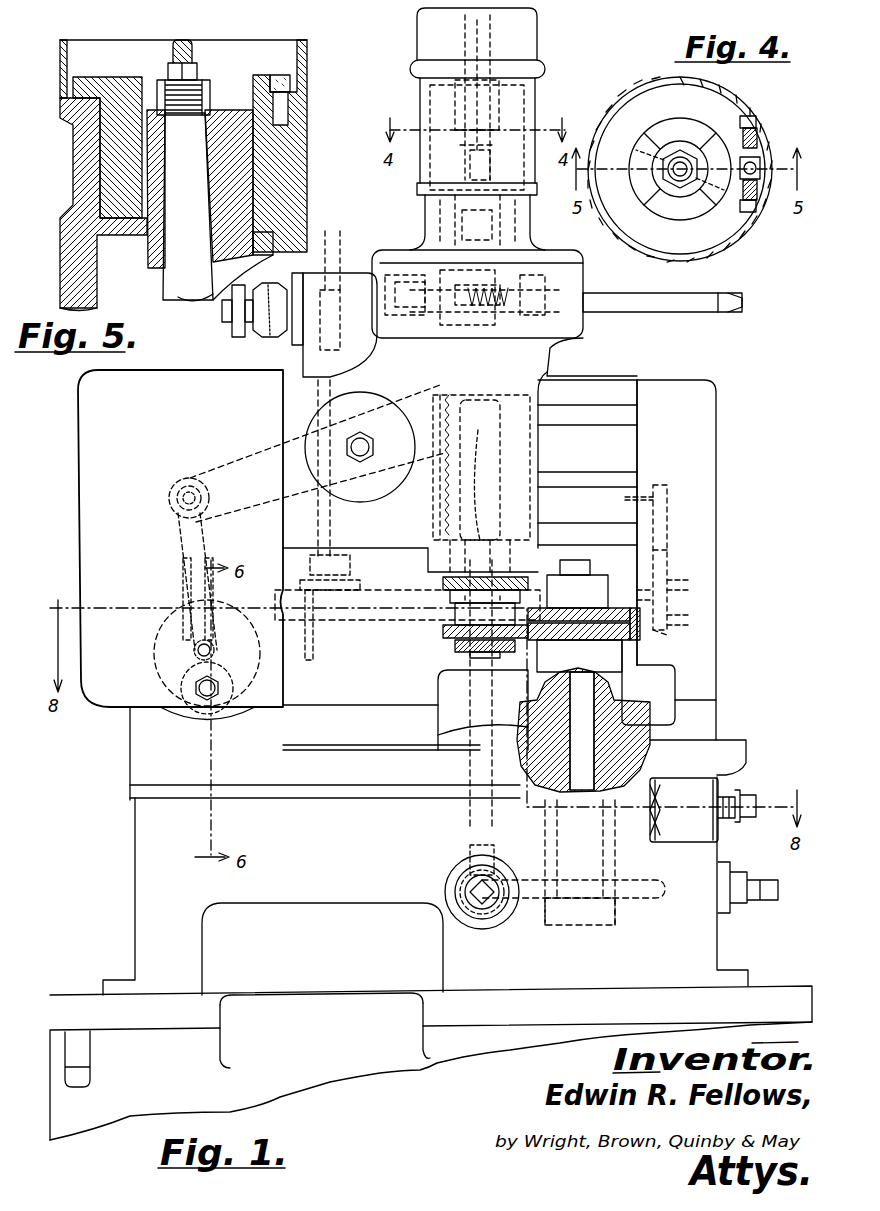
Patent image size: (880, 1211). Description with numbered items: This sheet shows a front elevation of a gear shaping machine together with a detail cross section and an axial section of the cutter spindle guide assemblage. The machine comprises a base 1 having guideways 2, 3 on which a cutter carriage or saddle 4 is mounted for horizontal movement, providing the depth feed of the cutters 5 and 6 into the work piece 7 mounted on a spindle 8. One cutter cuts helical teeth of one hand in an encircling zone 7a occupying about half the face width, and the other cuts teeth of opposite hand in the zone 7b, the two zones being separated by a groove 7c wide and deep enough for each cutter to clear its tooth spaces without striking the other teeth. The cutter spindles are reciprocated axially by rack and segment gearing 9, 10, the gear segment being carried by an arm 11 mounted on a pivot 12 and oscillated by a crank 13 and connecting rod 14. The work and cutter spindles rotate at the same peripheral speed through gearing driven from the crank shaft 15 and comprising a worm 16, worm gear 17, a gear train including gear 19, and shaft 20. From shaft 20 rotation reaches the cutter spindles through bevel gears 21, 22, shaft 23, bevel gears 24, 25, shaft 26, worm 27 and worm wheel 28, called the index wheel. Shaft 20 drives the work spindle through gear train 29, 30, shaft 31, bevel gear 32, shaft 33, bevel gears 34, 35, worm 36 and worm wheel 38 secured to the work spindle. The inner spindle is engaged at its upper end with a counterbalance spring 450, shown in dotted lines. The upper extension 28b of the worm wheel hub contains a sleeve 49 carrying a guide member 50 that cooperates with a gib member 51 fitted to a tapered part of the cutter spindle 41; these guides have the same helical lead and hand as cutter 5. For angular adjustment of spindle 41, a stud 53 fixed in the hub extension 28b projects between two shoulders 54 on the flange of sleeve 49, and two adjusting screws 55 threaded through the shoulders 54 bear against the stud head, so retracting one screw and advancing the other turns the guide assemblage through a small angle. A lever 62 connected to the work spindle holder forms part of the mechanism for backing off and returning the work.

In FIG. 1, the base 1 is at (150, 935).
In FIG. 1, the guideway 2 is at (590, 406).
In FIG. 1, the guideway 3 is at (582, 496).
In FIG. 1, the cutter carriage or saddle 4 is at (528, 462).
In FIG. 1, the cutter 5 is at (445, 636).
In FIG. 1, the cutter 6 is at (445, 580).
In FIG. 1, the work piece 7 is at (560, 645).
In FIG. 1, the encircling zone 7a is at (578, 608).
In FIG. 1, the zone 7b is at (600, 640).
In FIG. 1, the groove 7c is at (640, 630).
In FIG. 1, the spindle 8 is at (540, 772).
In FIG. 1, the rack 9 is at (420, 395).
In FIG. 1, the gear segment 10 is at (422, 440).
In FIG. 1, the arm 11 is at (262, 445).
In FIG. 1, the pivot 12 is at (362, 460).
In FIG. 1, the crank 13 is at (182, 688).
In FIG. 1, the connecting rod 14 is at (180, 548).
In FIG. 1, the crank shaft 15 is at (195, 652).
In FIG. 1, the worm 16 is at (214, 652).
In FIG. 1, the worm gear 17 is at (214, 556).
In FIG. 1, the gear train gear 19 is at (182, 568).
In FIG. 1, the shaft 20 is at (380, 622).
In FIG. 1, the bevel gear 21 is at (311, 633).
In FIG. 1, the bevel gear 22 is at (358, 580).
In FIG. 1, the shaft 23 is at (330, 538).
In FIG. 1, the bevel gear 24 is at (350, 290).
In FIG. 1, the bevel gear 25 is at (305, 285).
In FIG. 1, the shaft 26 is at (608, 302).
In FIG. 1, the worm 27 is at (540, 262).
In FIG. 1, the worm wheel 28 is at (580, 270).
In FIG. 5, the upper extension of the worm wheel hub 28b is at (288, 183).
In FIG. 1, the gear 29 is at (668, 598).
In FIG. 1, the gear 30 is at (668, 522).
In FIG. 1, the shaft 31 is at (476, 480).
In FIG. 1, the bevel gear 32 is at (460, 528).
In FIG. 1, the shaft 33 is at (450, 670).
In FIG. 1, the bevel gear 34 is at (466, 850).
In FIG. 1, the bevel gear 35 is at (462, 875).
In FIG. 1, the worm 36 is at (478, 918).
In FIG. 1, the worm wheel 38 is at (532, 900).
In FIG. 5, the cutter spindle 41 is at (170, 278).
In FIG. 5, the sleeve 49 is at (280, 140).
In FIG. 4, the sleeve 49 is at (718, 112).
In FIG. 5, the guide member 50 is at (122, 172).
In FIG. 4, the guide member 50 is at (662, 128).
In FIG. 5, the gib member 51 is at (238, 212).
In FIG. 4, the gib member 51 is at (672, 206).
In FIG. 5, the stud 53 is at (280, 76).
In FIG. 4, the stud 53 is at (762, 166).
In FIG. 4, the shoulders 54 is at (758, 150).
In FIG. 4, the adjusting screws 55 is at (756, 130).
In FIG. 1, the lever 62 is at (705, 828).
In FIG. 1, the counterbalance spring 450 is at (440, 88).